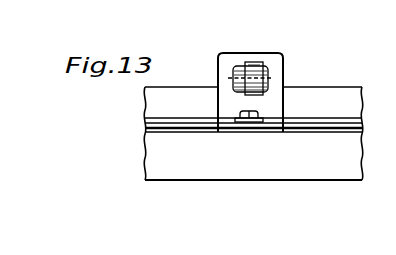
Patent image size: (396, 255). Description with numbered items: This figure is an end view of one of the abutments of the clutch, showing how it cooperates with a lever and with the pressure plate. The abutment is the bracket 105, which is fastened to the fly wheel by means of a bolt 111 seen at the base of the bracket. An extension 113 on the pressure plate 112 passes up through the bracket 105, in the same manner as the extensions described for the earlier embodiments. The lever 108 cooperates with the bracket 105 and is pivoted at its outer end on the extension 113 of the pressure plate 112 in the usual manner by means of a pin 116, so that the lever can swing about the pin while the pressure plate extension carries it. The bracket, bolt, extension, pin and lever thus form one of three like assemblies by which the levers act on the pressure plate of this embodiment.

The bracket 105 is at (222, 78).
The lever 108 is at (241, 70).
The bolt 111 is at (238, 116).
The pressure plate 112 is at (253, 133).
The extension 113 is at (261, 67).
The pin 116 is at (268, 82).